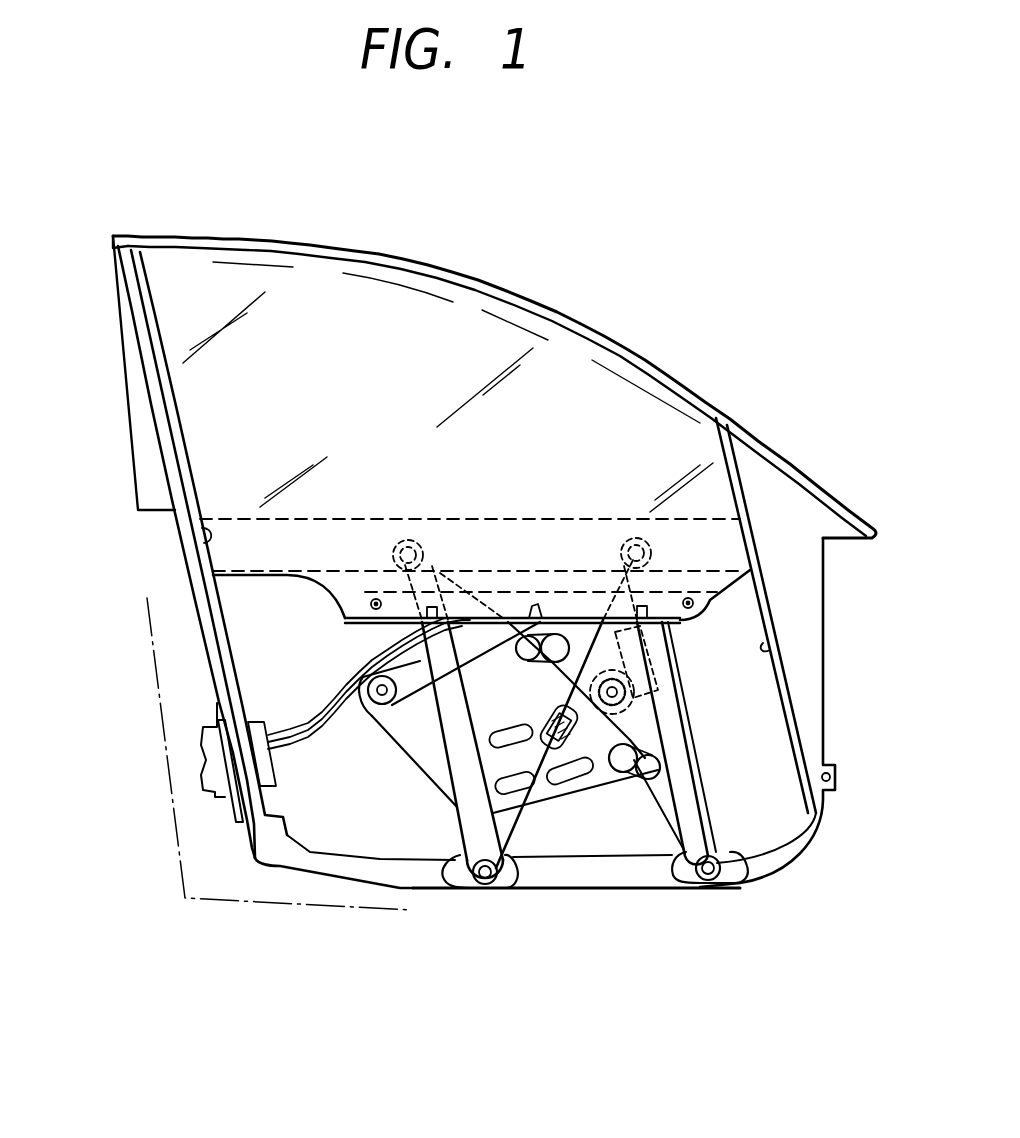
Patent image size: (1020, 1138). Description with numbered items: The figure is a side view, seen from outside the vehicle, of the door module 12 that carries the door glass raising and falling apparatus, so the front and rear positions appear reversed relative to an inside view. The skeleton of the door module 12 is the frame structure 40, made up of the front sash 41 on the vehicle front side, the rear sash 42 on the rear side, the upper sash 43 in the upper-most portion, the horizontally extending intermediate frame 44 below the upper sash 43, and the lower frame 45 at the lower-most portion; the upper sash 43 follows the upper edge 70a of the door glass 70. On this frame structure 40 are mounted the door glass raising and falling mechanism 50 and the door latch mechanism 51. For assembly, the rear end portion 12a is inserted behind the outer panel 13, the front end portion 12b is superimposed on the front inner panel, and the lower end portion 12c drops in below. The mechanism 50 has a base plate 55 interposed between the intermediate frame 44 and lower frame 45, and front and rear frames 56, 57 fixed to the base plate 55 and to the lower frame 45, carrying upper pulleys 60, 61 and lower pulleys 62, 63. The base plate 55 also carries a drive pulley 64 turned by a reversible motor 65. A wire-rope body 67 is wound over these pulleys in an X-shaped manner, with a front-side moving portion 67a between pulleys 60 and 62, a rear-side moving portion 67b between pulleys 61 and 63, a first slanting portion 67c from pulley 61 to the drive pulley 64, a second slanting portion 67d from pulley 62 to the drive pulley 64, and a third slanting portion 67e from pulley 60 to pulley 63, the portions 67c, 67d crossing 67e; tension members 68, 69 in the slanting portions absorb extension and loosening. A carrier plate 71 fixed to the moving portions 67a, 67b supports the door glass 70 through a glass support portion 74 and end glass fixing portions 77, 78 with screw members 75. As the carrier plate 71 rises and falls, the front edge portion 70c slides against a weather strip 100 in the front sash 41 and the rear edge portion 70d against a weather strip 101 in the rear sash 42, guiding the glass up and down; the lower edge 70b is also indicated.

The door module 12 is at (388, 231).
The rear end portion 12a is at (236, 865).
The front end portion 12b is at (840, 812).
The lower end portion 12c is at (456, 905).
The outer panel 13 is at (300, 910).
The frame structure 40 is at (669, 905).
The front sash 41 is at (748, 512).
The rear sash 42 is at (177, 463).
The upper sash 43 is at (486, 281).
The intermediate frame 44 is at (533, 518).
The lower frame 45 is at (570, 893).
The door glass raising and falling mechanism 50 is at (703, 688).
The door latch mechanism 51 is at (203, 740).
The base plate 55 is at (600, 782).
The front frame 56 is at (687, 803).
The rear frame 57 is at (455, 748).
The upper pulley 60 is at (633, 540).
The upper pulley 61 is at (405, 540).
The lower pulley 62 is at (738, 876).
The lower pulley 63 is at (493, 878).
The drive pulley 64 is at (630, 700).
The motor 65 is at (665, 650).
The wire-rope body 67 is at (450, 845).
The front-side moving portion 67a is at (698, 775).
The rear-side moving portion 67b is at (455, 820).
The first slanting portion 67c is at (567, 682).
The second slanting portion 67d is at (650, 800).
The third slanting portion 67e is at (527, 812).
The tension member 68 is at (520, 653).
The tension member 69 is at (660, 765).
The door glass 70 is at (677, 450).
The upper edge 70a is at (257, 242).
The glass run lower portion 70b is at (470, 610).
The front edge portion 70c is at (755, 553).
The rear edge portion 70d is at (170, 409).
The carrier plate 71 is at (384, 712).
The glass support portion 74 is at (541, 610).
The screw member 75 is at (363, 603).
The glass fixing portion 77 is at (692, 598).
The glass fixing portion 78 is at (370, 596).
The weather strip 100 is at (763, 643).
The weather strip 101 is at (208, 537).